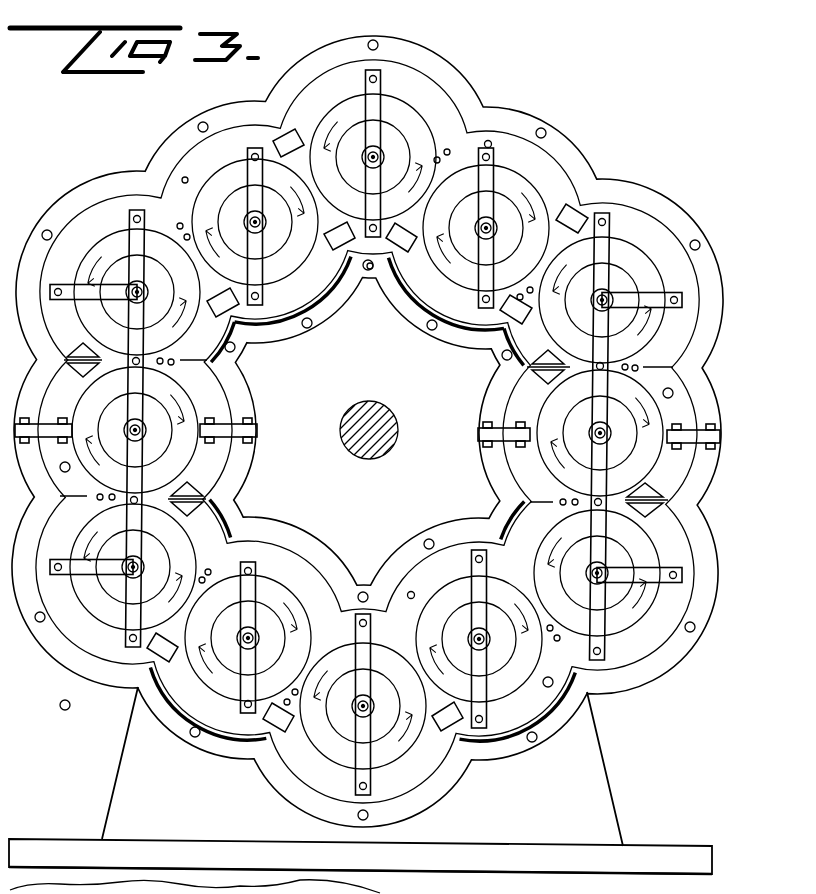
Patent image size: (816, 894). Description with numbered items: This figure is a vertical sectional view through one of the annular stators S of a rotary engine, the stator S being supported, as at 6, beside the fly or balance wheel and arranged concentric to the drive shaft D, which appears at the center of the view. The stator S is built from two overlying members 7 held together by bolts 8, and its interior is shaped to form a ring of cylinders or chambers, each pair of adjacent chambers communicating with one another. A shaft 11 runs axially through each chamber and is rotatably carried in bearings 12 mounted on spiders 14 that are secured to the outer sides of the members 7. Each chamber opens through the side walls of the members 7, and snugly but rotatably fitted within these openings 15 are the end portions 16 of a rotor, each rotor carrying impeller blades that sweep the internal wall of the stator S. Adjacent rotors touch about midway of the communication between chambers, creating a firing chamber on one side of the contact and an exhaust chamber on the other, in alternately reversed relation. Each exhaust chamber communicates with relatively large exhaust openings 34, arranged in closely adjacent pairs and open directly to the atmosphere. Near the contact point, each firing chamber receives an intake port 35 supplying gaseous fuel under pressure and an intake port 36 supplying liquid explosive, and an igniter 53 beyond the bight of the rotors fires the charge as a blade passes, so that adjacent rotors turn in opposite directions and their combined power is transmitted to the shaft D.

The support 6 is at (602, 783).
The overlying members 7 is at (88, 218).
The bolts 8 is at (47, 230).
The shaft 11 is at (680, 583).
The bearings 12 is at (612, 298).
The spiders 14 is at (372, 92).
The openings 15 is at (620, 623).
The end portions 16 is at (618, 622).
The exhaust openings 34 is at (297, 135).
The intake port 35 is at (187, 234).
The intake port 36 is at (180, 223).
The igniter 53 is at (488, 141).
The stator S is at (580, 138).
The shaft D is at (349, 410).